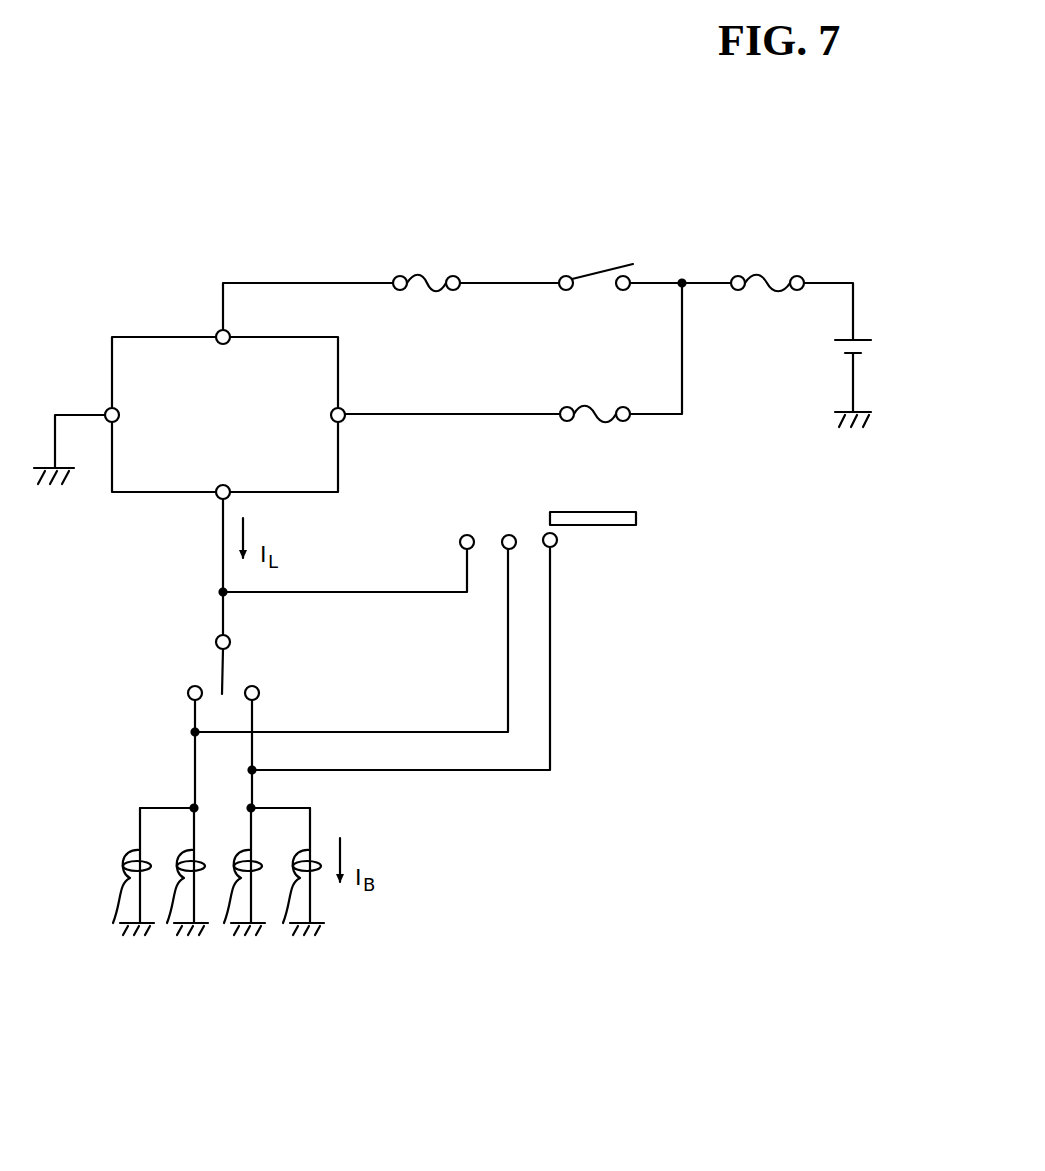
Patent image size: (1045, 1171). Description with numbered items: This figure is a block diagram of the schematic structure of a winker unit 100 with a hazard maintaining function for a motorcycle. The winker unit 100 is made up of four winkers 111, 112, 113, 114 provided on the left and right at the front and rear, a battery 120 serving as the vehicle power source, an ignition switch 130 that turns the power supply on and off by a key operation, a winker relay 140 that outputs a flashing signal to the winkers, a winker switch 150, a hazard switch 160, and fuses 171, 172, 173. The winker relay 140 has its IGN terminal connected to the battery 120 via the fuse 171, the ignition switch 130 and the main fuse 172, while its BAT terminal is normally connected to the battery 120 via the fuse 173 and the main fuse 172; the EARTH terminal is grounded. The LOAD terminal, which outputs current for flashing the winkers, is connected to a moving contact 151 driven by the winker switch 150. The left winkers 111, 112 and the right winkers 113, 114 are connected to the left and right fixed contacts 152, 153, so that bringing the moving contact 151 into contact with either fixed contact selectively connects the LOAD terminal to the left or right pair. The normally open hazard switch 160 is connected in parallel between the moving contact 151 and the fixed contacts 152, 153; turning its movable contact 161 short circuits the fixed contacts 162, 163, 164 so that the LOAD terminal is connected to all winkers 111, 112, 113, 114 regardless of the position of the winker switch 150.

The winker unit 100 is at (606, 172).
The winker 111 is at (112, 926).
The winker 112 is at (166, 926).
The winker 113 is at (223, 926).
The winker 114 is at (282, 926).
The battery 120 is at (862, 341).
The ignition switch 130 is at (641, 268).
The winker relay 140 is at (281, 338).
The winker switch 150 is at (222, 713).
The moving contact 151 is at (232, 670).
The left fixed contact 152 is at (189, 699).
The right fixed contact 153 is at (259, 689).
The hazard switch 160 is at (434, 620).
The movable contact 161 is at (596, 512).
The fixed contact 162 is at (460, 537).
The fixed contact 163 is at (511, 534).
The fixed contact 164 is at (558, 545).
The fuse 171 is at (426, 290).
The main fuse 172 is at (770, 290).
The fuse 173 is at (602, 414).